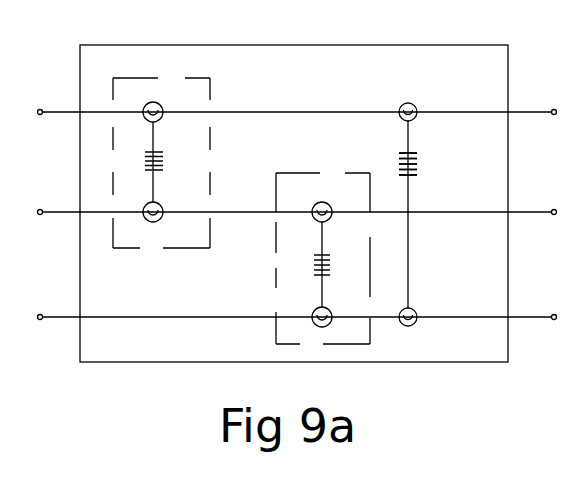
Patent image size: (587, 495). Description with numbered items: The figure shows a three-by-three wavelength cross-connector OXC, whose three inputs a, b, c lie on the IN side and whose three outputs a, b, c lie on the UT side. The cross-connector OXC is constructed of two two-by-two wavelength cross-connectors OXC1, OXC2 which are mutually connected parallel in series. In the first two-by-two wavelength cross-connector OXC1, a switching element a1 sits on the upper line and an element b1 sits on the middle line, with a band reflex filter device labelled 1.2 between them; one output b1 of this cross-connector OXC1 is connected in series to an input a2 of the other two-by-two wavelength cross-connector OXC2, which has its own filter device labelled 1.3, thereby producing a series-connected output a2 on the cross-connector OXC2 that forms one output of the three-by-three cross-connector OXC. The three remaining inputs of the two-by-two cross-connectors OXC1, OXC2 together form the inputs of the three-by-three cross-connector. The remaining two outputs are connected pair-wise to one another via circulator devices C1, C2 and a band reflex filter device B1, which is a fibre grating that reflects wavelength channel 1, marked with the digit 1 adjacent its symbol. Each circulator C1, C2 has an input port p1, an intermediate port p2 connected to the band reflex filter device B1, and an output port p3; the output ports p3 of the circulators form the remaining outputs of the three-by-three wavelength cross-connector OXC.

The 3×3 wavelength cross-connector OXC is at (293, 190).
The first 2×2 wavelength cross-connector OXC1 is at (160, 151).
The second 2×2 wavelength cross-connector OXC2 is at (321, 247).
The first circulator device C1 is at (396, 104).
The second circulator device C2 is at (398, 331).
The band reflex filter device B1 is at (395, 214).
The wavelength channel 1 is at (417, 164).
The grating channel 1.2 is at (180, 162).
The grating channel 1.3 is at (347, 274).
The circulator input port p1 is at (397, 121).
The circulator intermediate port p2 is at (415, 122).
The circulator output port p3 is at (421, 105).
The switch a1 is at (192, 106).
The output of first 2×2 wavelength cross-connector b1 is at (192, 206).
The input and series-connected output of second 2×2 wavelength cross-connector a2 is at (324, 206).
The input side IN is at (44, 187).
The output side UT is at (556, 188).
The input and output a is at (297, 98).
The input and output b is at (298, 198).
The fiber c is at (297, 303).